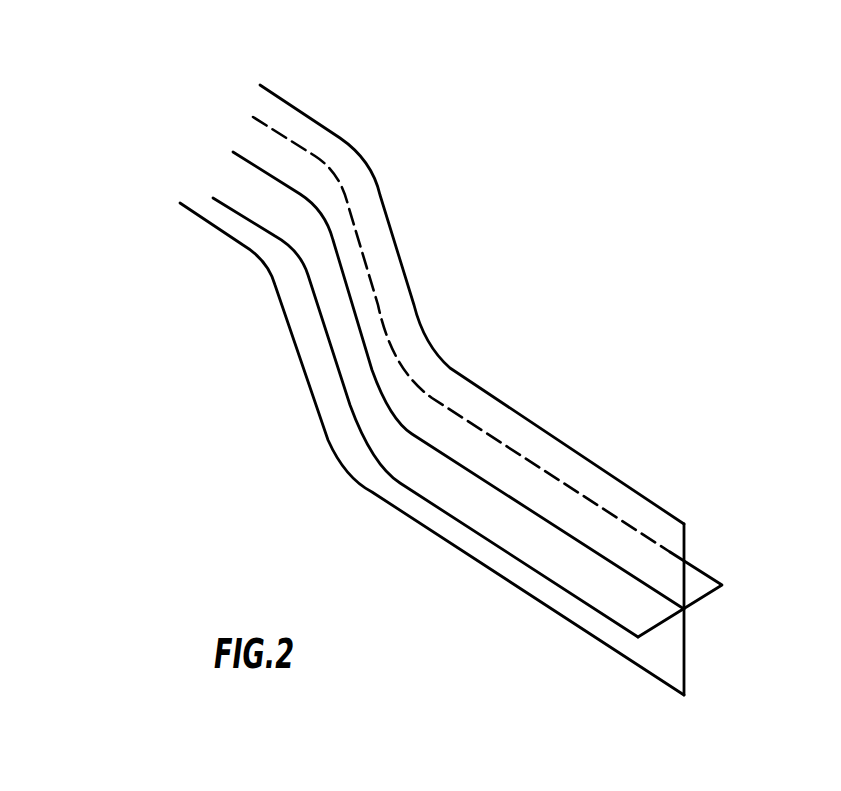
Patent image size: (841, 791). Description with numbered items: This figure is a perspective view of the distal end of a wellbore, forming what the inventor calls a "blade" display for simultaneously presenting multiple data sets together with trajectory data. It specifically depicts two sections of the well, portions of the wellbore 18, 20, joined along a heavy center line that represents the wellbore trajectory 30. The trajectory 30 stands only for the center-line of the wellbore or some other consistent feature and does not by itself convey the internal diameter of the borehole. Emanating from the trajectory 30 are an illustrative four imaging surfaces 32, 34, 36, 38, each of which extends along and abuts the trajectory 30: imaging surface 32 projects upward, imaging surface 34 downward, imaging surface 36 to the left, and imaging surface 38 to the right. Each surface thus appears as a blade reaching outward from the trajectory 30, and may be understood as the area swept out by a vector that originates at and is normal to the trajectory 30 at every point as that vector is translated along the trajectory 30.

The portion of the wellbore 18 is at (477, 402).
The portion of the wellbore 20 is at (498, 458).
The wellbore trajectory 30 is at (455, 467).
The imaging surface 32 is at (684, 532).
The imaging surface 34 is at (685, 682).
The imaging surface 36 is at (638, 637).
The imaging surface 38 is at (723, 584).